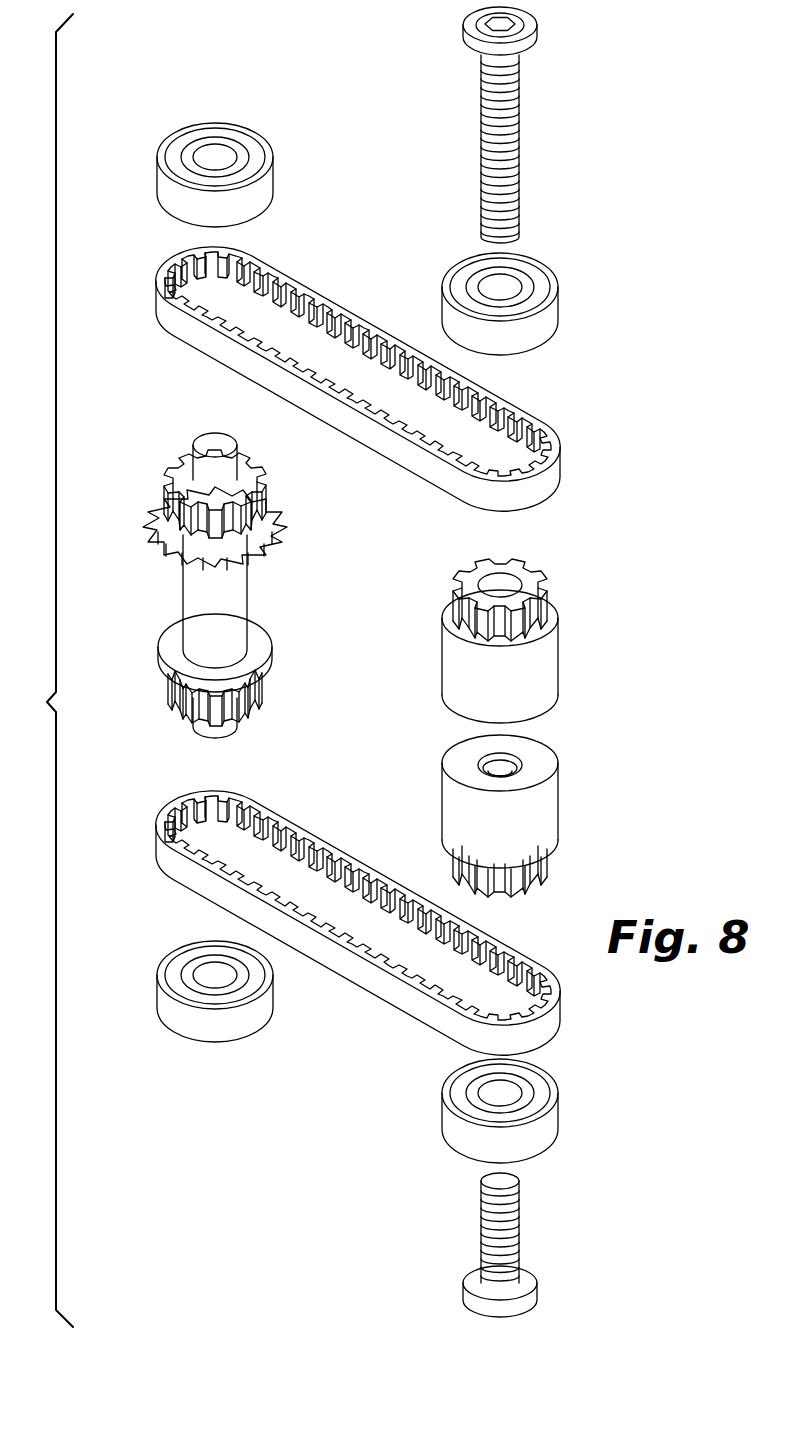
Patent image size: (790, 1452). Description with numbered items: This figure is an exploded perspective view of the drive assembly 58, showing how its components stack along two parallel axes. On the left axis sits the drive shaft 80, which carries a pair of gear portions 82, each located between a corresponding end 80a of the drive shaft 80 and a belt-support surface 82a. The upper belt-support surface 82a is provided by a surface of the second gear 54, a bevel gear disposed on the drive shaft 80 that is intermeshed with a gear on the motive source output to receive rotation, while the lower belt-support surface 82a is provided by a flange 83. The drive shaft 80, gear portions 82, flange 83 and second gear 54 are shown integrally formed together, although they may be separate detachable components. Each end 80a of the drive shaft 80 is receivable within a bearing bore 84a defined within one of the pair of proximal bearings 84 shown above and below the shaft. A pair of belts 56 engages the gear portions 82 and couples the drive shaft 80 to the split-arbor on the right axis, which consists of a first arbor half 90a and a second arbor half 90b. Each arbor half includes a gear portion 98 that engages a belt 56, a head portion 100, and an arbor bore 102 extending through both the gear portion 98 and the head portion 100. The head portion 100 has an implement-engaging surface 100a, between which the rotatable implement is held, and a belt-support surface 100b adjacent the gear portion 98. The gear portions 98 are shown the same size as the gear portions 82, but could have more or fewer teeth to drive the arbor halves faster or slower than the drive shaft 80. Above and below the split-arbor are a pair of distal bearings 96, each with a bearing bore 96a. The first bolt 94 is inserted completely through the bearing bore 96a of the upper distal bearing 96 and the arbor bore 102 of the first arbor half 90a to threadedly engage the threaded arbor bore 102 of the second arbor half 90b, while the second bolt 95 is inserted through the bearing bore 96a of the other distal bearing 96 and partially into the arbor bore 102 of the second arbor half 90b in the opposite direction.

The drive assembly 58 is at (45, 670).
The proximal bearing 84 is at (157, 156).
The bearing bore 84a is at (209, 150).
The first bolt 94 is at (520, 128).
The distal bearing 96 is at (559, 303).
The bearing bore 96a is at (490, 292).
The belt 56 is at (560, 463).
The drive shaft 80 is at (183, 586).
The end of the drive shaft 80a is at (197, 438).
The gear portion 82 is at (268, 469).
The belt-support surface 82a is at (262, 517).
The second gear 54 is at (148, 537).
The flange 83 is at (158, 656).
The first arbor half 90a is at (559, 671).
The second arbor half 90b is at (559, 797).
The head portion 100 is at (543, 715).
The implement-engaging surface 100a is at (448, 713).
The belt-support surface 100b is at (546, 629).
The gear portion 98 is at (548, 583).
The arbor bore 102 is at (505, 583).
The second bolt 95 is at (520, 1213).